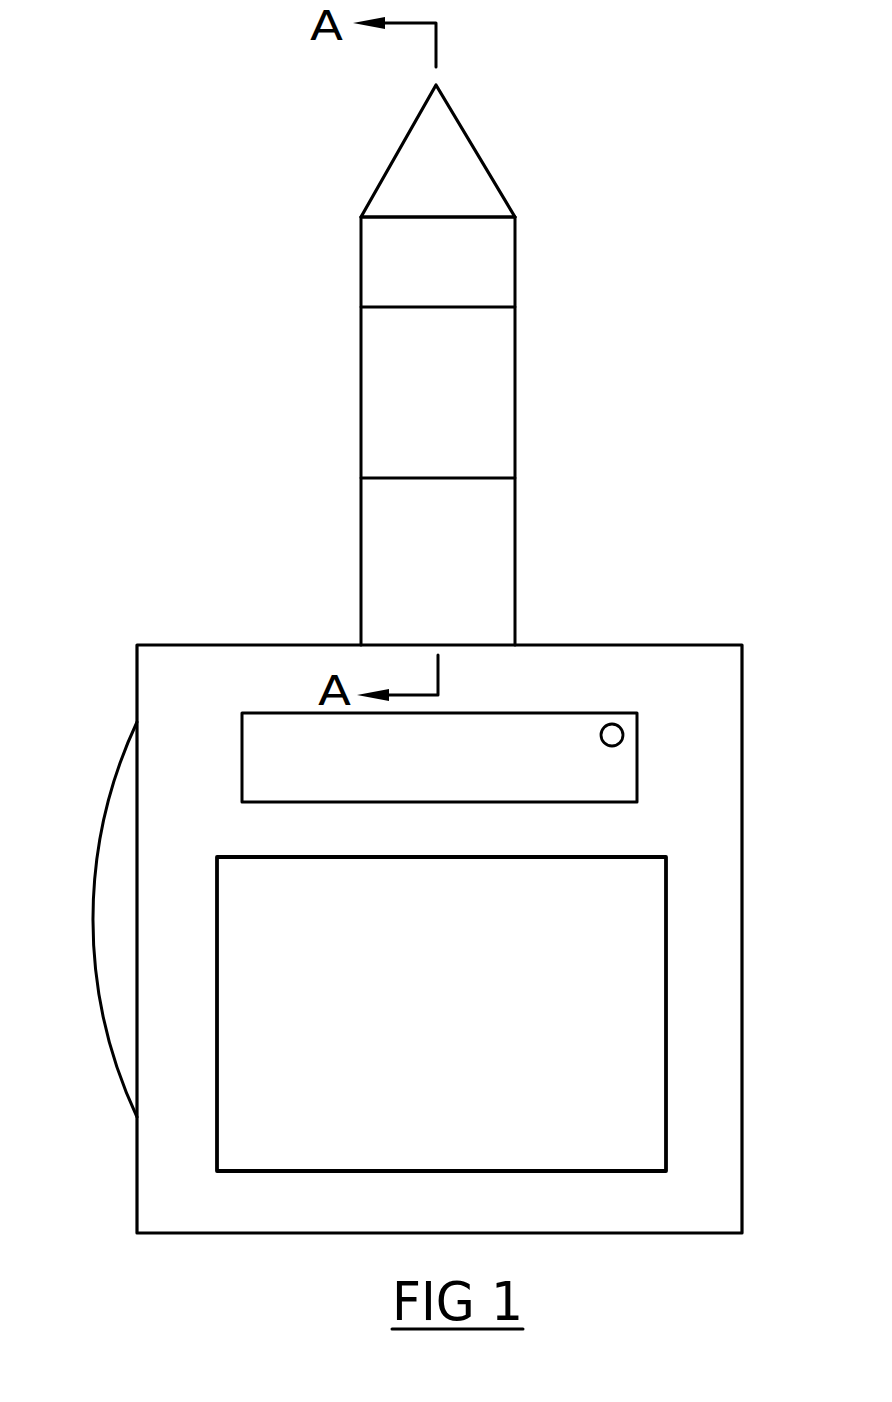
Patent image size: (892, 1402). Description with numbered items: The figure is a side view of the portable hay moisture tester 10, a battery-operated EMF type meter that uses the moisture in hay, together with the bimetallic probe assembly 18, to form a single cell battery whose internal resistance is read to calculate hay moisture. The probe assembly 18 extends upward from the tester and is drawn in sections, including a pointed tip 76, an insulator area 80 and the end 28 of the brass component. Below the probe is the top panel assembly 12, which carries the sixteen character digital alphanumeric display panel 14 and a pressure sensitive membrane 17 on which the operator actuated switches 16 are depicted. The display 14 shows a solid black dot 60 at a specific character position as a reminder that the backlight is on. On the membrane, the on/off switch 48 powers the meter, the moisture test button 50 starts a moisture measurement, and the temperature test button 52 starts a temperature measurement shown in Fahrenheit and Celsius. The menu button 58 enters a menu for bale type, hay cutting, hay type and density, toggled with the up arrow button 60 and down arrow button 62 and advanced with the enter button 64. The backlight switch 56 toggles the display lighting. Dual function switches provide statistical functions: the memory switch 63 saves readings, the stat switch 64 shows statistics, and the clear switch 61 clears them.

The portable hay moisture tester 10 is at (66, 912).
The top panel assembly 12 is at (160, 772).
The digital alphanumeric display panel 14 is at (442, 775).
The operator actuated switches 16 is at (650, 972).
The pressure sensitive membrane 17 is at (460, 1130).
The bimetallic probe assembly 18 is at (316, 331).
The end of the brass component 28 is at (452, 397).
The on/off switch 48 is at (262, 885).
The moisture test button 50 is at (280, 1133).
The temperature test button 52 is at (638, 1082).
The backlight switch 56 is at (607, 877).
The menu button 58 is at (445, 882).
The up arrow button 60 is at (608, 724).
The clear switch 61 is at (630, 1020).
The down arrow button 62 is at (618, 950).
The MEM key 63 is at (252, 1023).
The enter button 64 is at (240, 967).
The probe tip 76 is at (452, 195).
The insulator area 80 is at (452, 275).